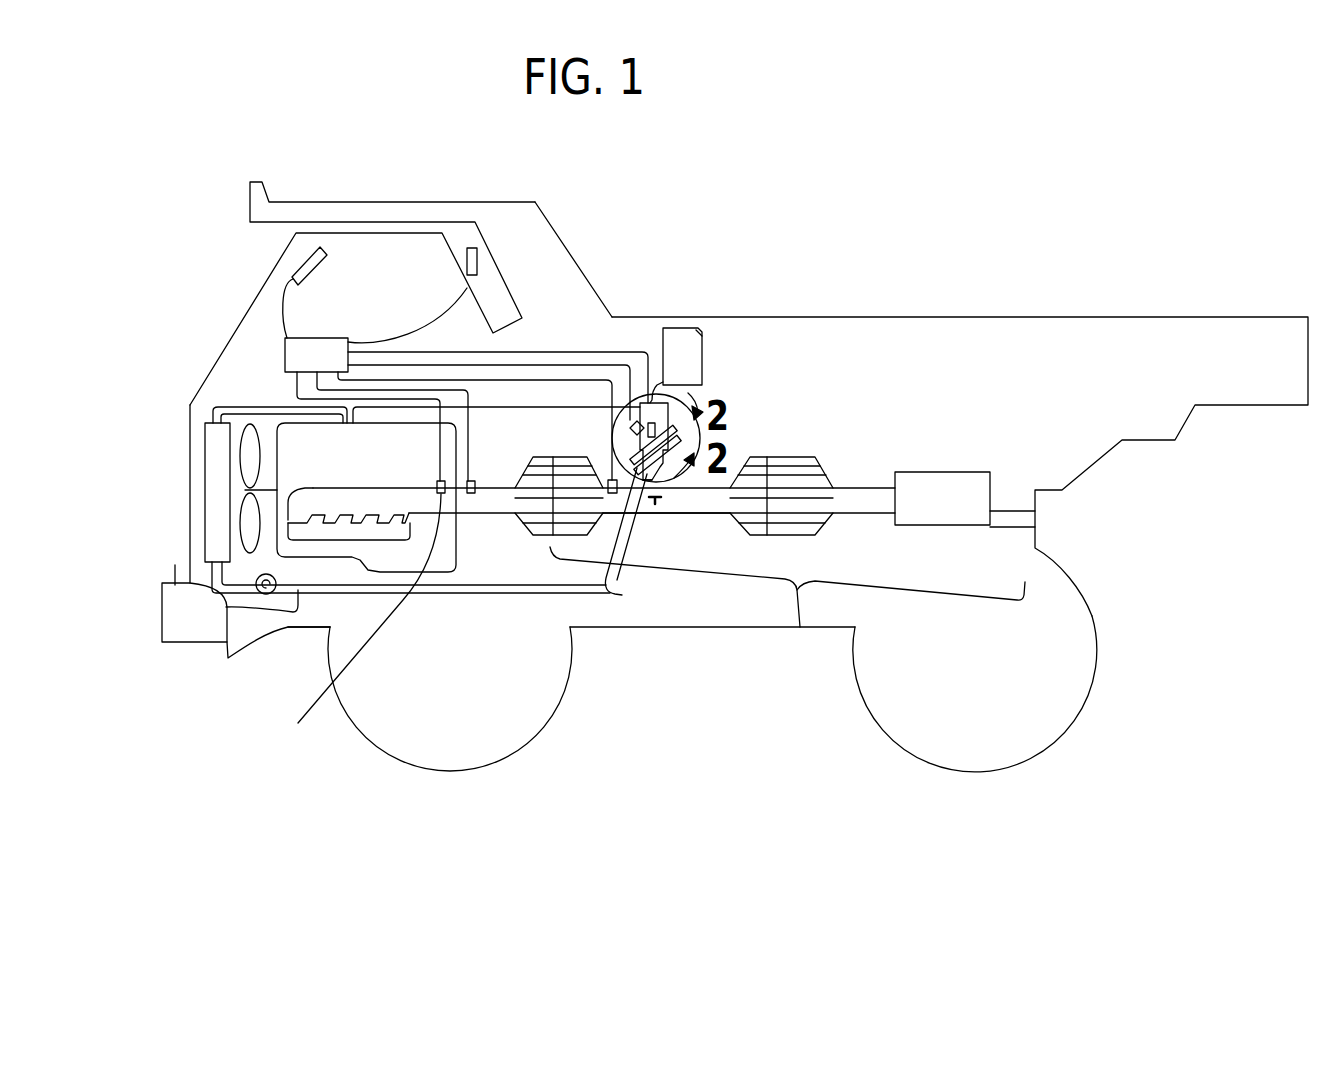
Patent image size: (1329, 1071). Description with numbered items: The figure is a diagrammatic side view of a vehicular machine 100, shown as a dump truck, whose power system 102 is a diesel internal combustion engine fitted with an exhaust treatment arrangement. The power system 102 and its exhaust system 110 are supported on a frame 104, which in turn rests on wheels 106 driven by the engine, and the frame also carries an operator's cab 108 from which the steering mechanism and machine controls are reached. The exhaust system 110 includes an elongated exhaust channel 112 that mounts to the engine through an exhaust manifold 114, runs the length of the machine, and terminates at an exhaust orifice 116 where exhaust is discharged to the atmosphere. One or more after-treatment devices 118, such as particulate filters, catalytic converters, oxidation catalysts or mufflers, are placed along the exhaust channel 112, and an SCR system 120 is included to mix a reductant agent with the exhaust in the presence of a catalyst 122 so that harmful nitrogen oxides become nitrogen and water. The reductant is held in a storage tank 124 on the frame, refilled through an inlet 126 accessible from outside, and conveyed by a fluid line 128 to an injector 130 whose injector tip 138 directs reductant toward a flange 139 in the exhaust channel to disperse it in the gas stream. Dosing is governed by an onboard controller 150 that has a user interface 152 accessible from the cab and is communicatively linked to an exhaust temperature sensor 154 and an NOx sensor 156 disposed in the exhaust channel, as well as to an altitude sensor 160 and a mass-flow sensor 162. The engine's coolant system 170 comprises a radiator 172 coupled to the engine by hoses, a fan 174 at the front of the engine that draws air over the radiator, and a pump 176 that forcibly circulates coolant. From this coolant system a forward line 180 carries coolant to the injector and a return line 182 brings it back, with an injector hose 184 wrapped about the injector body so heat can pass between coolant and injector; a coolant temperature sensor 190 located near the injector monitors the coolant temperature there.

The vehicular machine 100 is at (633, 157).
The power system 102 is at (290, 443).
The frame 104 is at (182, 622).
The wheels 106 is at (452, 747).
The operator's cab 108 is at (388, 290).
The exhaust system 110 is at (553, 537).
The exhaust channel 112 is at (507, 514).
The exhaust manifold 114 is at (332, 627).
The exhaust orifice 116 is at (1027, 523).
The after-treatment devices 118 is at (800, 627).
The SCR system 120 is at (790, 317).
The catalyst 122 is at (812, 513).
The storage tank 124 is at (698, 331).
The inlet 126 is at (678, 343).
The fluid line 128 is at (648, 403).
The injector 130 is at (697, 514).
The injector tip 138 is at (660, 502).
The flange 139 is at (649, 485).
The controller 150 is at (287, 343).
The user interface 152 is at (314, 258).
The exhaust temperature sensor 154 is at (497, 418).
The NOx sensor 156 is at (472, 494).
The altitude sensor 160 is at (477, 262).
The mass-flow sensor 162 is at (345, 548).
The coolant system 170 is at (226, 607).
The radiator 172 is at (205, 450).
The fan 174 is at (238, 513).
The pump 176 is at (267, 594).
The forward line 180 is at (609, 481).
The return line 182 is at (620, 595).
The injector hose 184 is at (604, 596).
The coolant temperature sensor 190 is at (645, 430).